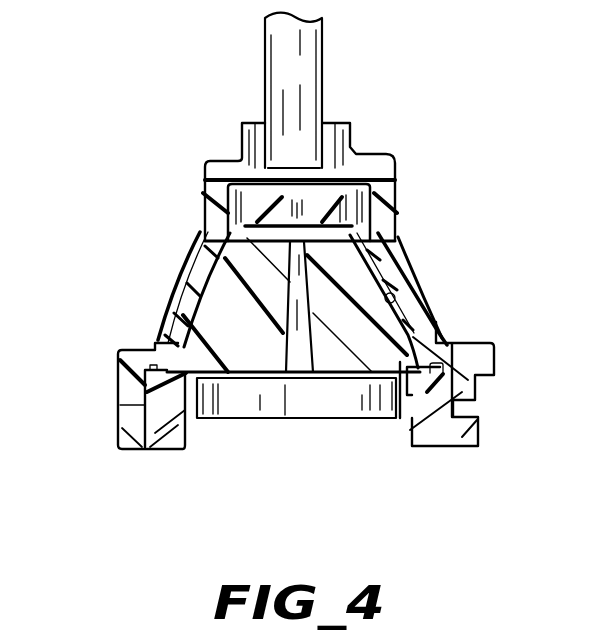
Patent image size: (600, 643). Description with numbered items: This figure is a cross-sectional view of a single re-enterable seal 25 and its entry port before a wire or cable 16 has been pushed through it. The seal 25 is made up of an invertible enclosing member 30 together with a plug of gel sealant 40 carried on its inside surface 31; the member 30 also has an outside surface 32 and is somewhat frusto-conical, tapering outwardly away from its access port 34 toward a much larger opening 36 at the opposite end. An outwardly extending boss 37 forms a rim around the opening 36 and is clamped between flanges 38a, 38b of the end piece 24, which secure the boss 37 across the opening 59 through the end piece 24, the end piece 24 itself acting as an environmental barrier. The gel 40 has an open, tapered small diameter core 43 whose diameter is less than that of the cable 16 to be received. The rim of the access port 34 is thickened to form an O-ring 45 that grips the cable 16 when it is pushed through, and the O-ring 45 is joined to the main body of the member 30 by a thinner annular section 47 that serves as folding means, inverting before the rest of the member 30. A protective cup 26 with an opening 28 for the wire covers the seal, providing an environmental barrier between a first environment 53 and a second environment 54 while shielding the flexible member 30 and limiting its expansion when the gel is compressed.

The cable 16 is at (306, 78).
The end piece 24 is at (163, 425).
The re-enterable seal 25 is at (197, 300).
The cup 26 is at (203, 200).
The opening 28 is at (263, 122).
The enclosing member 30 is at (205, 240).
The inside surface 31 is at (398, 283).
The outside surface 32 is at (388, 300).
The access port 34 is at (297, 212).
The opening 36 is at (233, 382).
The outwardly extending boss 37 is at (425, 379).
The flange 38a is at (453, 353).
The flange 38b is at (167, 410).
The plug of sealant 40 is at (222, 332).
The gel core 43 is at (298, 352).
The O-ring 45 is at (330, 203).
The thinner annular section 47 is at (225, 205).
The first environment 53 is at (557, 45).
The second environment 54 is at (560, 525).
The opening 59 is at (367, 403).